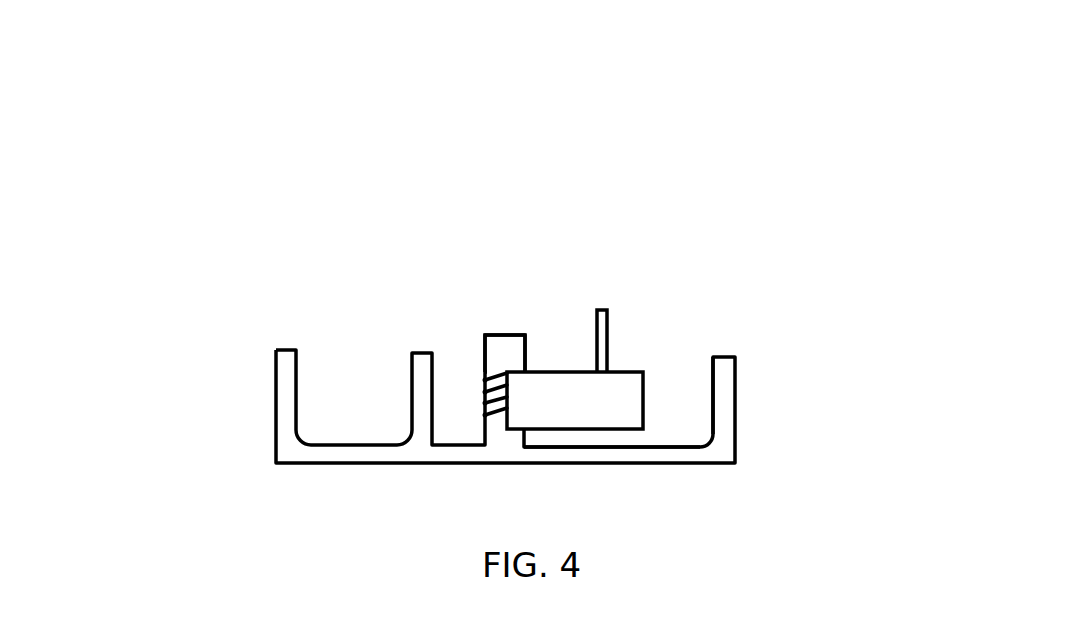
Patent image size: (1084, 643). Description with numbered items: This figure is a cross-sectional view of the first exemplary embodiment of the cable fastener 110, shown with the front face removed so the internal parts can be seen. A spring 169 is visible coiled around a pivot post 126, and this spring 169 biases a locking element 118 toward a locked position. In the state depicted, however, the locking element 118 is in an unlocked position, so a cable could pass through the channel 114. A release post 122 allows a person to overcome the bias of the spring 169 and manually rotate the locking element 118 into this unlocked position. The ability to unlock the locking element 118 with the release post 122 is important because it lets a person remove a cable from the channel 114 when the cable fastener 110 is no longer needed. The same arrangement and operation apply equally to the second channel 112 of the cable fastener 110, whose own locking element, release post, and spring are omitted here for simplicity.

The cable fastener 110 is at (307, 287).
The channel 112 is at (296, 395).
The channel 114 is at (707, 395).
The locking element 118 is at (628, 378).
The release post 122 is at (604, 326).
The pivot post 126 is at (513, 343).
The spring 169 is at (484, 380).